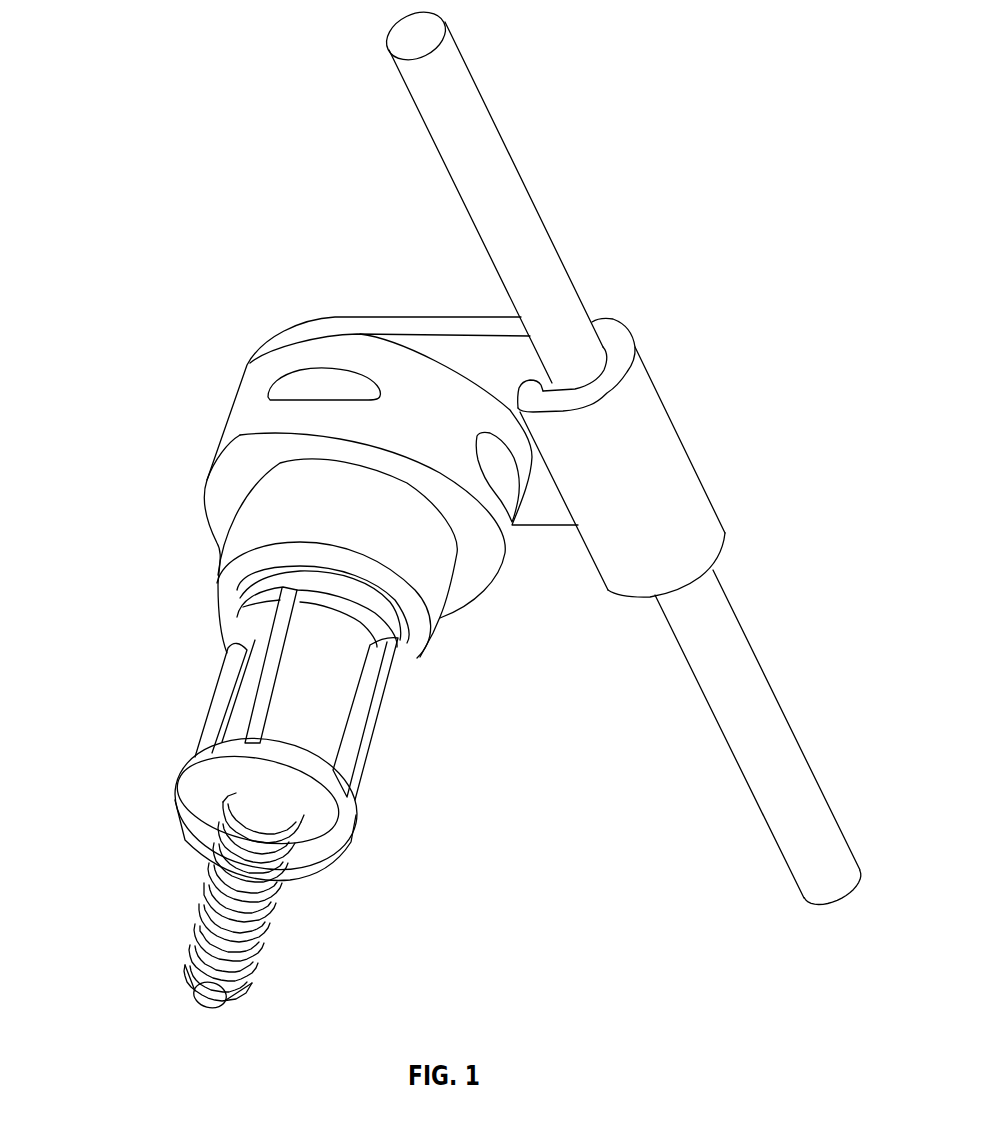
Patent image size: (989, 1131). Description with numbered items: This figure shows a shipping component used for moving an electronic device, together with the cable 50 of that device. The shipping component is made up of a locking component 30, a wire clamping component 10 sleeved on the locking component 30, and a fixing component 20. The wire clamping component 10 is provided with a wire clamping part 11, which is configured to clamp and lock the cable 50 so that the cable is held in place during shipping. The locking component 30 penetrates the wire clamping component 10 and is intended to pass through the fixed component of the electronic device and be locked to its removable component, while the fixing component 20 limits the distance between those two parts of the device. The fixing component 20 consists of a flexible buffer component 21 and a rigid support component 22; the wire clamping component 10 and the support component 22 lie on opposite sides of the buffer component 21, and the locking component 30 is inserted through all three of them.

The wire clamping component 10 is at (466, 414).
The wire clamping part 11 is at (547, 409).
The fixing component 20 is at (265, 622).
The buffer component 21 is at (240, 435).
The support component 22 is at (247, 726).
The locking component 30 is at (212, 870).
The cable 50 is at (527, 190).